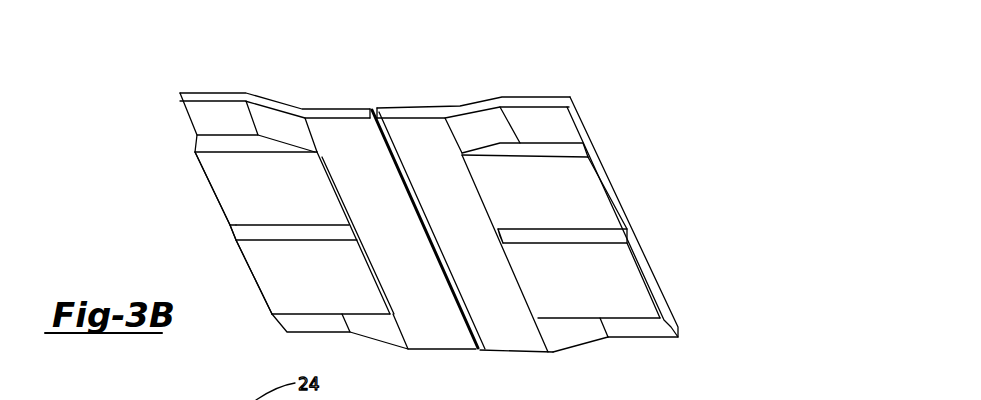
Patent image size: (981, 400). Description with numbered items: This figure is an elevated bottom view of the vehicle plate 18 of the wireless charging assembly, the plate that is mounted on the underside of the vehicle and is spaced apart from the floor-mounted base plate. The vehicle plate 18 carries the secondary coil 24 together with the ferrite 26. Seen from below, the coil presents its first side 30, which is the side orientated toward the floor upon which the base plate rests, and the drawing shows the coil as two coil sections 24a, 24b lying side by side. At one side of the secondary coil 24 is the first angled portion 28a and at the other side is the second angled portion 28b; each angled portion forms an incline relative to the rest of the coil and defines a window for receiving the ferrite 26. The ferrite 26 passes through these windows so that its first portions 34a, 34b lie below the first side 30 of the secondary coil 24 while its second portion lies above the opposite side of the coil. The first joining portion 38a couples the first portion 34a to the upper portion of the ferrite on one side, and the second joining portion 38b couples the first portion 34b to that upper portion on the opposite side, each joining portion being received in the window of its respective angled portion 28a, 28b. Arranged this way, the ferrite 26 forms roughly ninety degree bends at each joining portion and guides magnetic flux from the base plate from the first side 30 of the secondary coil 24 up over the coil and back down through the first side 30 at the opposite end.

The vehicle plate 18 is at (407, 202).
The secondary coil 24 is at (403, 178).
The first tile module 24a is at (307, 199).
The second tile module 24b is at (523, 198).
The ferrite 26 is at (247, 270).
The first angled portion 28a is at (258, 93).
The second angled portion 28b is at (460, 107).
The first side 30 is at (637, 337).
The first portion 34a is at (208, 182).
The first portion 34b is at (592, 163).
The first joining portion 38a is at (277, 148).
The second joining portion 38b is at (493, 150).